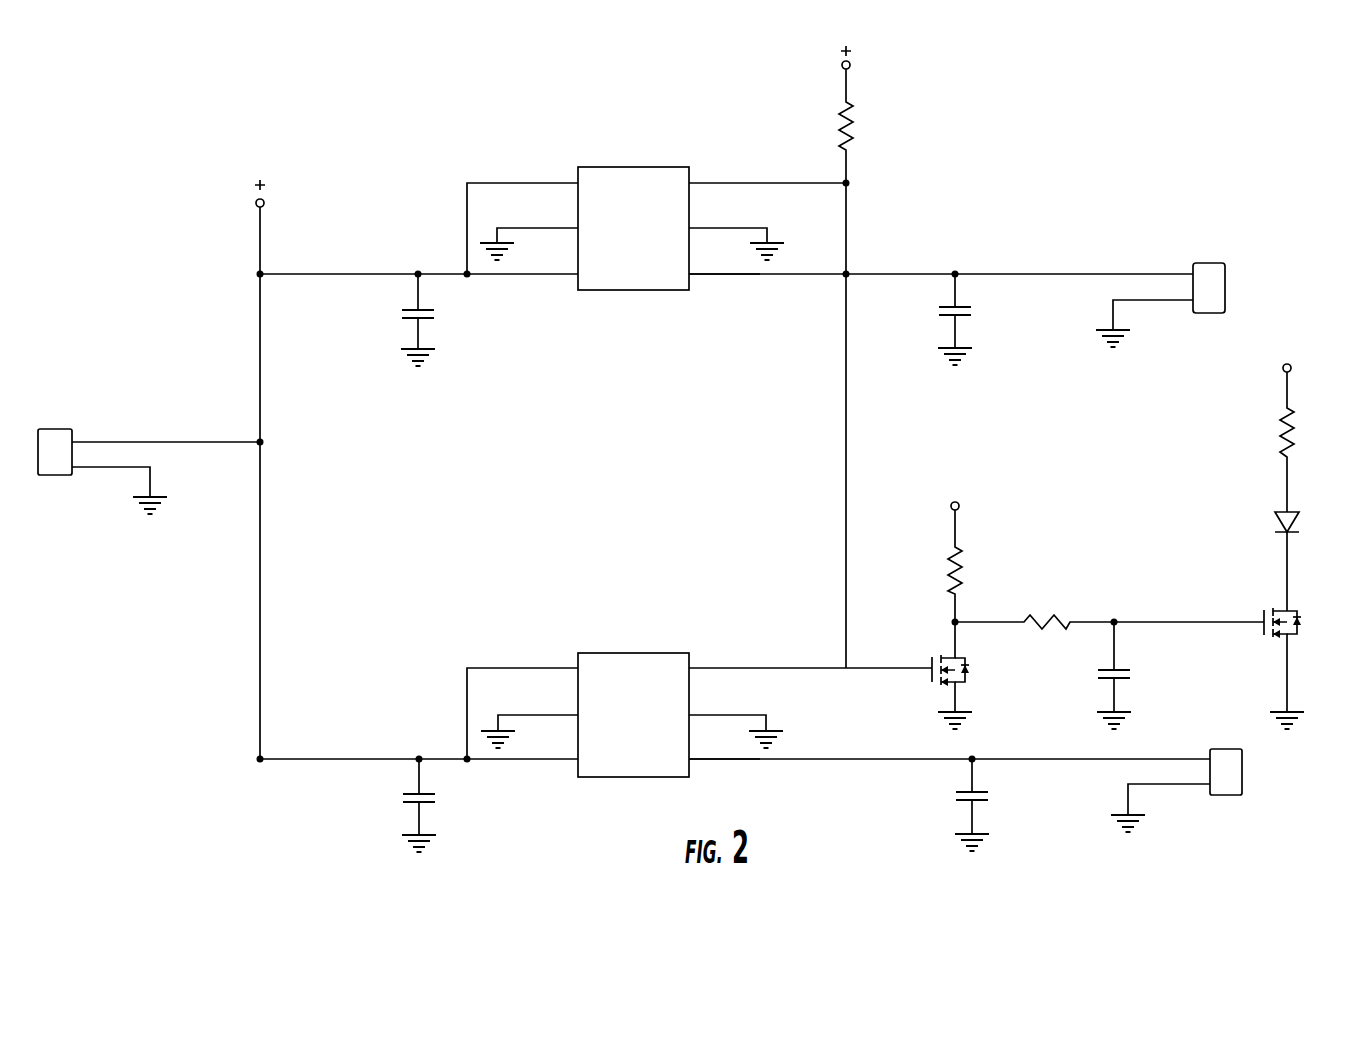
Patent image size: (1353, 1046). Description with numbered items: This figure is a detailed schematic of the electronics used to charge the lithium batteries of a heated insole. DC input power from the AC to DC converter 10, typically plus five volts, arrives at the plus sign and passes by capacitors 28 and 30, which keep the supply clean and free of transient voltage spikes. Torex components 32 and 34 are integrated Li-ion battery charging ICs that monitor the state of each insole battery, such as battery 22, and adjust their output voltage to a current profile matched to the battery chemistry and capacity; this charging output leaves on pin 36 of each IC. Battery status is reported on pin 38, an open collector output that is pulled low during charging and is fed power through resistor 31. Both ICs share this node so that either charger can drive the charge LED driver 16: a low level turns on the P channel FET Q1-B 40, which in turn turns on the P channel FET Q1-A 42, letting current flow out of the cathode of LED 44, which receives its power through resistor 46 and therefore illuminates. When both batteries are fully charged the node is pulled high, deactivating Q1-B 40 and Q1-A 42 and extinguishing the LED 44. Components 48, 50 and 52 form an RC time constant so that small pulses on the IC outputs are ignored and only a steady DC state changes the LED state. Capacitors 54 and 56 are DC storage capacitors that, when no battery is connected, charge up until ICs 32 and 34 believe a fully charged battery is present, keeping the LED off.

The DC converter 10 is at (66, 428).
The charge LED driver 16 is at (1026, 586).
The battery 22 is at (1245, 767).
The capacitor 28 is at (411, 309).
The capacitor 30 is at (412, 794).
The resistor 31 is at (830, 114).
The Torex component 32 is at (581, 138).
The Torex component 34 is at (586, 610).
The output pin 36 is at (693, 273).
The status pin 38 is at (697, 182).
The P channel FET Q1-B 40 is at (932, 676).
The P channel FET Q1-A 42 is at (1292, 608).
The LED 44 is at (1290, 510).
The resistor 46 is at (1282, 430).
The resistor 48 is at (950, 578).
The resistor 50 is at (1040, 628).
The capacitor 52 is at (1122, 671).
The DC storage capacitor 54 is at (966, 793).
The DC storage capacitor 56 is at (952, 308).